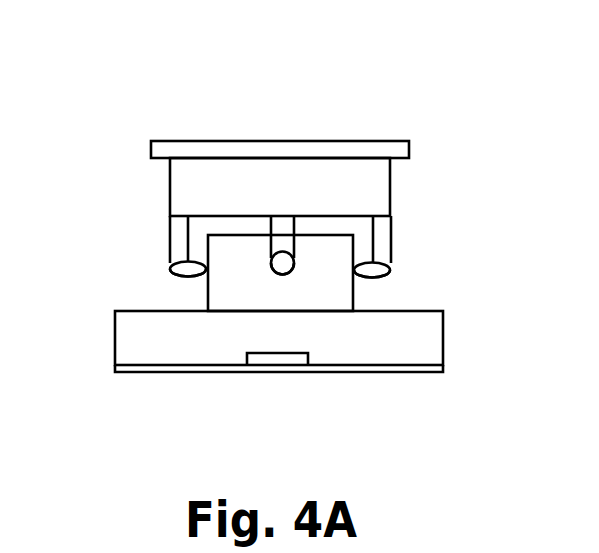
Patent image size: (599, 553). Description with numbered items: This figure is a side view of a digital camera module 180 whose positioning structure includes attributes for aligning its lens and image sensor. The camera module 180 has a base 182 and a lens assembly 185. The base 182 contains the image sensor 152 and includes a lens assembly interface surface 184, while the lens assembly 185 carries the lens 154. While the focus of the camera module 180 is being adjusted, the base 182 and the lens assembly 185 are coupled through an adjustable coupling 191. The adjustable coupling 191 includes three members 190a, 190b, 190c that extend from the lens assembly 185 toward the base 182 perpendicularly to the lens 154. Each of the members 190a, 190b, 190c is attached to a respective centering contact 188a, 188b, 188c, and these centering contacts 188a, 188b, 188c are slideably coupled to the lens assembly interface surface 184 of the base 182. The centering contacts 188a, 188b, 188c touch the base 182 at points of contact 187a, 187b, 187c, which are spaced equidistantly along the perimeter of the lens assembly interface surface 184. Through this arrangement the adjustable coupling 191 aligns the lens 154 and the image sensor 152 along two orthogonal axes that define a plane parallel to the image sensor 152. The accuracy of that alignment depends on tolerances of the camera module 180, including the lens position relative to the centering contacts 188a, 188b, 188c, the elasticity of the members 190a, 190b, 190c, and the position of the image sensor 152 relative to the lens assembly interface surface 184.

The digital camera module 180 is at (428, 62).
The lens 154 is at (237, 142).
The lens assembly 185 is at (95, 123).
The base 182 is at (497, 237).
The member 190a is at (170, 249).
The member 190b is at (393, 237).
The member 190c is at (287, 226).
The centering contact 188a is at (170, 271).
The centering contact 188b is at (393, 271).
The centering contact 188c is at (270, 258).
The point of contact 187a is at (206, 275).
The point of contact 187b is at (363, 273).
The point of contact 187c is at (273, 275).
The lens assembly interface surface 184 is at (355, 302).
The image sensor 152 is at (263, 372).
The adjustable coupling 191 is at (422, 257).